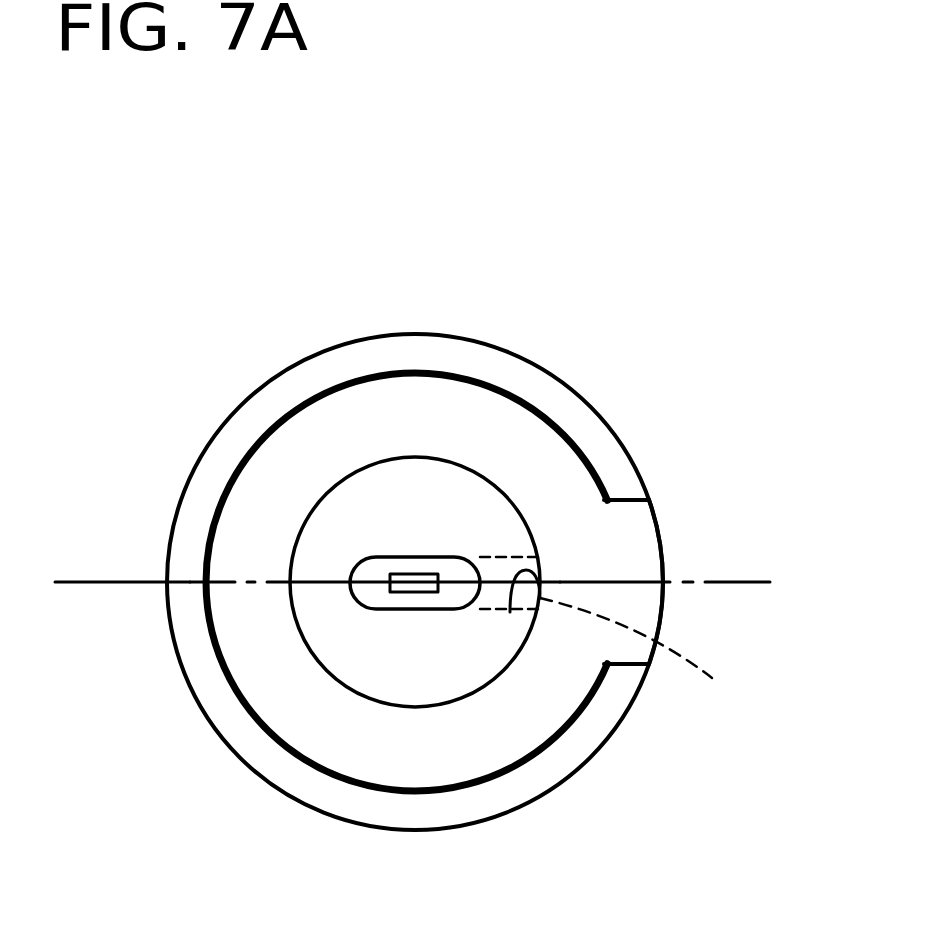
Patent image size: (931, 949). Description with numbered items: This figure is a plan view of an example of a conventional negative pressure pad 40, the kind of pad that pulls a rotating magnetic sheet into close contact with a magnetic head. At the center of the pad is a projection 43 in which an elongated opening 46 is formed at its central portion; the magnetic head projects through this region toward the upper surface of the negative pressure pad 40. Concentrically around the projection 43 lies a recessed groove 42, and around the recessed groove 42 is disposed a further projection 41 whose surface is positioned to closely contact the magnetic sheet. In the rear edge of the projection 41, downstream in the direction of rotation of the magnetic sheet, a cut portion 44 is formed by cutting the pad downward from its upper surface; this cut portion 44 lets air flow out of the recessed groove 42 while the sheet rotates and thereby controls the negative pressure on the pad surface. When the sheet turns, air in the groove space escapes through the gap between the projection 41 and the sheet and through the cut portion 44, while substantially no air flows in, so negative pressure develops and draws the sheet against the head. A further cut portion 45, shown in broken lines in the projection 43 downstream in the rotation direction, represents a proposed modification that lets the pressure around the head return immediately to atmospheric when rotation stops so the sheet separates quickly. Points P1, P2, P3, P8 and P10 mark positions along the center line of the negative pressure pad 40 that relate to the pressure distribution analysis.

The negative pressure pad 40 is at (516, 352).
The projection 41 is at (538, 382).
The recessed groove 42 is at (565, 445).
The projection 43 is at (370, 482).
The cut portion 44 is at (648, 532).
The cut portion 45 is at (622, 635).
The elongated opening 46 is at (455, 570).
The position P1 is at (167, 583).
The position P2 is at (205, 583).
The position P3 is at (289, 583).
The position P8 is at (510, 612).
The position P10 is at (667, 583).